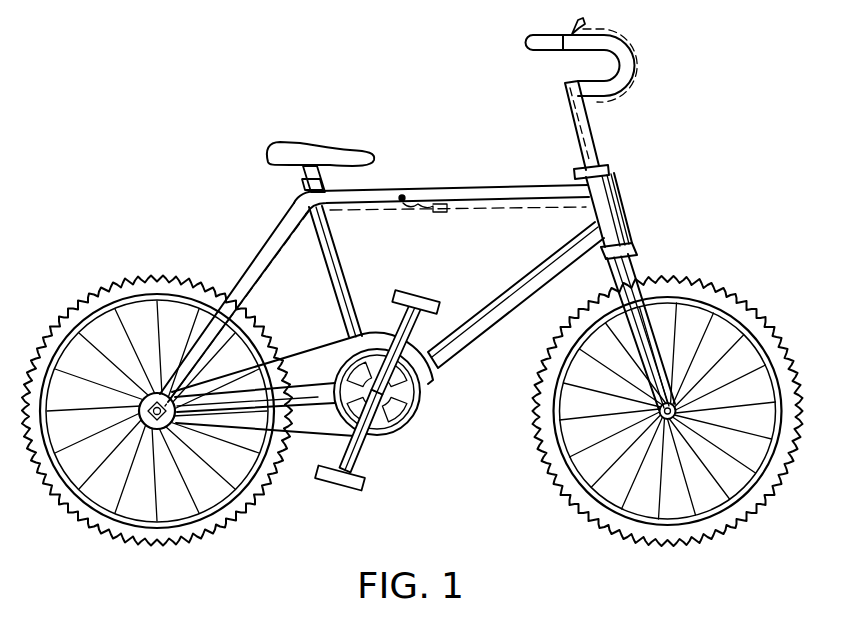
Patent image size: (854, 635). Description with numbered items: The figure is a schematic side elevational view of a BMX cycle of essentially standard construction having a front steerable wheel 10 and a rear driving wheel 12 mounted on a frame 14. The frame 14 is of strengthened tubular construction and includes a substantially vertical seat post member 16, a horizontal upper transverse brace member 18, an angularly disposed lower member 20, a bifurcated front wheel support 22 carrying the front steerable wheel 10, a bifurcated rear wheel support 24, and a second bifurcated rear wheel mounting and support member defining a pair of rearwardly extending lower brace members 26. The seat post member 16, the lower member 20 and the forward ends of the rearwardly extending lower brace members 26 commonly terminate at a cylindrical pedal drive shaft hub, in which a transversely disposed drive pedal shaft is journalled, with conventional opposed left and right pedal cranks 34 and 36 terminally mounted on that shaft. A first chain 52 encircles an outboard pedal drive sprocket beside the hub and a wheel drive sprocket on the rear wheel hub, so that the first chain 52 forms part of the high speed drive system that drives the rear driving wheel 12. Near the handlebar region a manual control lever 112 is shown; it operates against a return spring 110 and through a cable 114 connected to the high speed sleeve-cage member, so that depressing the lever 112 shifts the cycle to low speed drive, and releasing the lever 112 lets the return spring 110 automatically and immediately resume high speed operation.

The front steerable wheel 10 is at (697, 278).
The rear driving wheel 12 is at (133, 273).
The frame 14 is at (240, 192).
The seat post member 16 is at (338, 245).
The upper transverse brace member 18 is at (508, 146).
The lower member 20 is at (507, 290).
The bifurcated front wheel support 22 is at (650, 335).
The bifurcated rear wheel support 24 is at (257, 258).
The rearwardly extending lower brace members 26 is at (247, 403).
The left pedal crank 34 is at (405, 318).
The right pedal crank 36 is at (365, 452).
The first chain 52 is at (330, 440).
The return spring 110 is at (423, 207).
The manual control lever 112 is at (568, 28).
The cable 114 is at (636, 64).